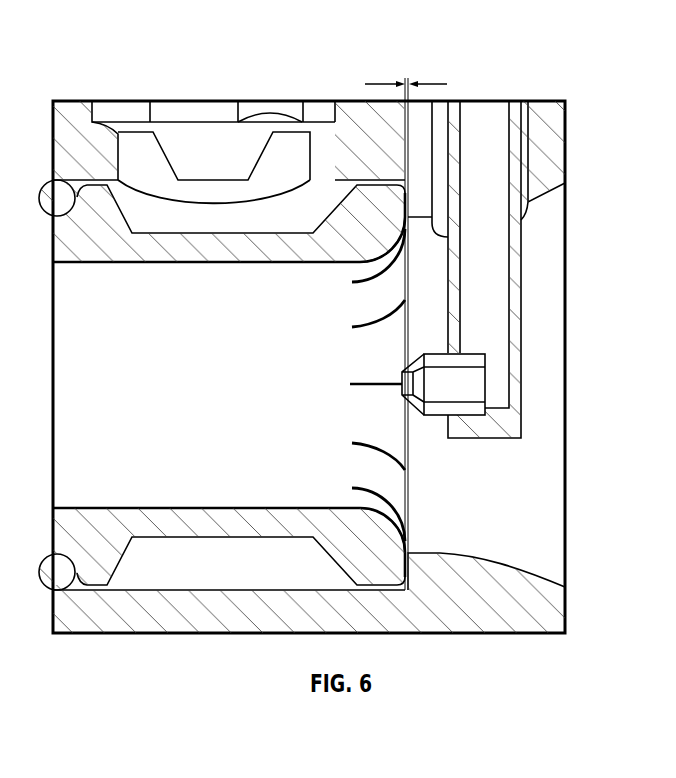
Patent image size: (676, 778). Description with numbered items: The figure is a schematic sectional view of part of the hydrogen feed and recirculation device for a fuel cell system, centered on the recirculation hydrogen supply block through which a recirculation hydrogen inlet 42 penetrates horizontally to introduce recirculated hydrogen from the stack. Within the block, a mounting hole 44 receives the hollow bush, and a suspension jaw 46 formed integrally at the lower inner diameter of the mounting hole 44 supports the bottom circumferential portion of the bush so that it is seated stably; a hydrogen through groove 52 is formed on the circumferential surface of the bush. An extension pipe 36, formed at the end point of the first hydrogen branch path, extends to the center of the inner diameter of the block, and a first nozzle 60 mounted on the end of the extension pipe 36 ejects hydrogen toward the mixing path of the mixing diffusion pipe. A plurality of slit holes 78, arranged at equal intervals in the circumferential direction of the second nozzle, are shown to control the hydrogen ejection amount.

The extension pipe 36 is at (522, 323).
The recirculation hydrogen inlet 42 is at (533, 495).
The mounting hole 44 is at (118, 153).
The suspension jaw 46 is at (94, 120).
The hydrogen through groove 52 is at (195, 112).
The first nozzle 60 is at (437, 416).
The slit holes 78 is at (368, 325).